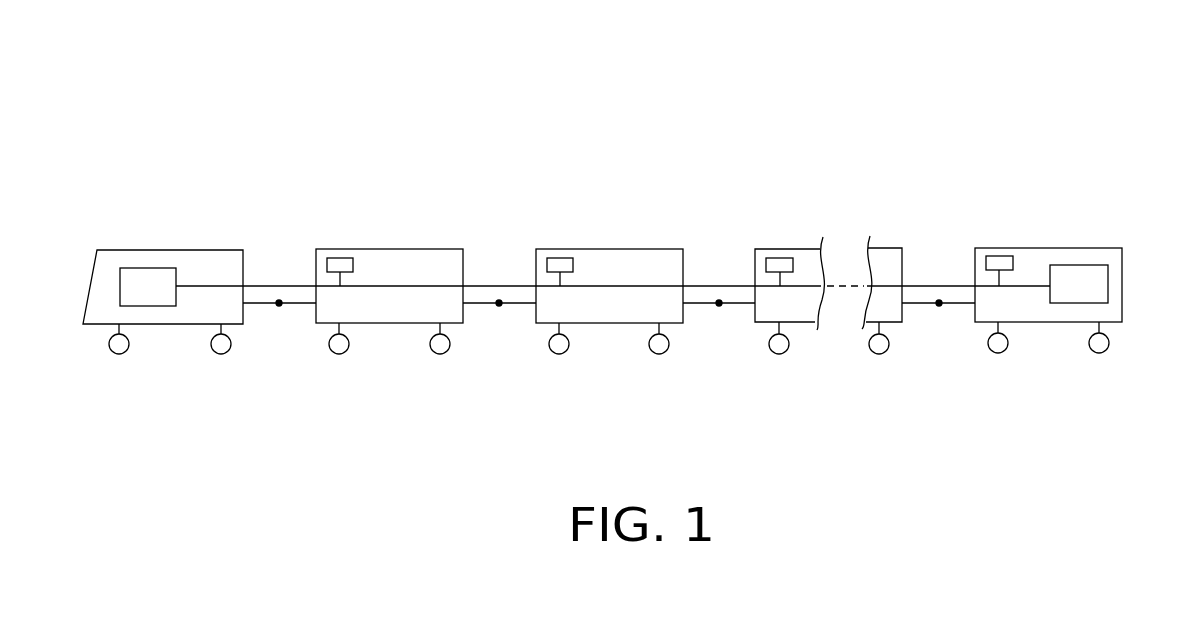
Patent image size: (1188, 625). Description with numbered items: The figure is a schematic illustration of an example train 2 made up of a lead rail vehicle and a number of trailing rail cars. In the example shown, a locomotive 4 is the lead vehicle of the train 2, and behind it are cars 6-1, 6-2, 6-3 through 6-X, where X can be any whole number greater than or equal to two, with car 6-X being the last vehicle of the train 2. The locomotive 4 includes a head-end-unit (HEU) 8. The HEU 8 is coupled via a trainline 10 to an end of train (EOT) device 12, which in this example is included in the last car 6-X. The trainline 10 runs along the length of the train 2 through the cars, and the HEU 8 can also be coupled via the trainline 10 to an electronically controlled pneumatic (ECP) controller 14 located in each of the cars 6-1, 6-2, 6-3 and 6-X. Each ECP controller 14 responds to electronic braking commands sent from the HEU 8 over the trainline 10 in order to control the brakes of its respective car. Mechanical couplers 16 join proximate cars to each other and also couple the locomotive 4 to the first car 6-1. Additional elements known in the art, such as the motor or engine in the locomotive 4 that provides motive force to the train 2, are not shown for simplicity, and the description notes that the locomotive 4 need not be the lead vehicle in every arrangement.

The train 2 is at (642, 92).
The locomotive 4 is at (170, 250).
The car 6-1 is at (390, 249).
The car 6-2 is at (604, 249).
The car 6-3 is at (810, 247).
The car 6-X is at (1050, 248).
The head-end-unit (HEU) 8 is at (133, 268).
The trainline 10 is at (268, 286).
The end of train (EOT) device 12 is at (1082, 265).
The electronically controlled pneumatic (ECP) controller 14 is at (343, 258).
The mechanical coupler 16 is at (279, 306).